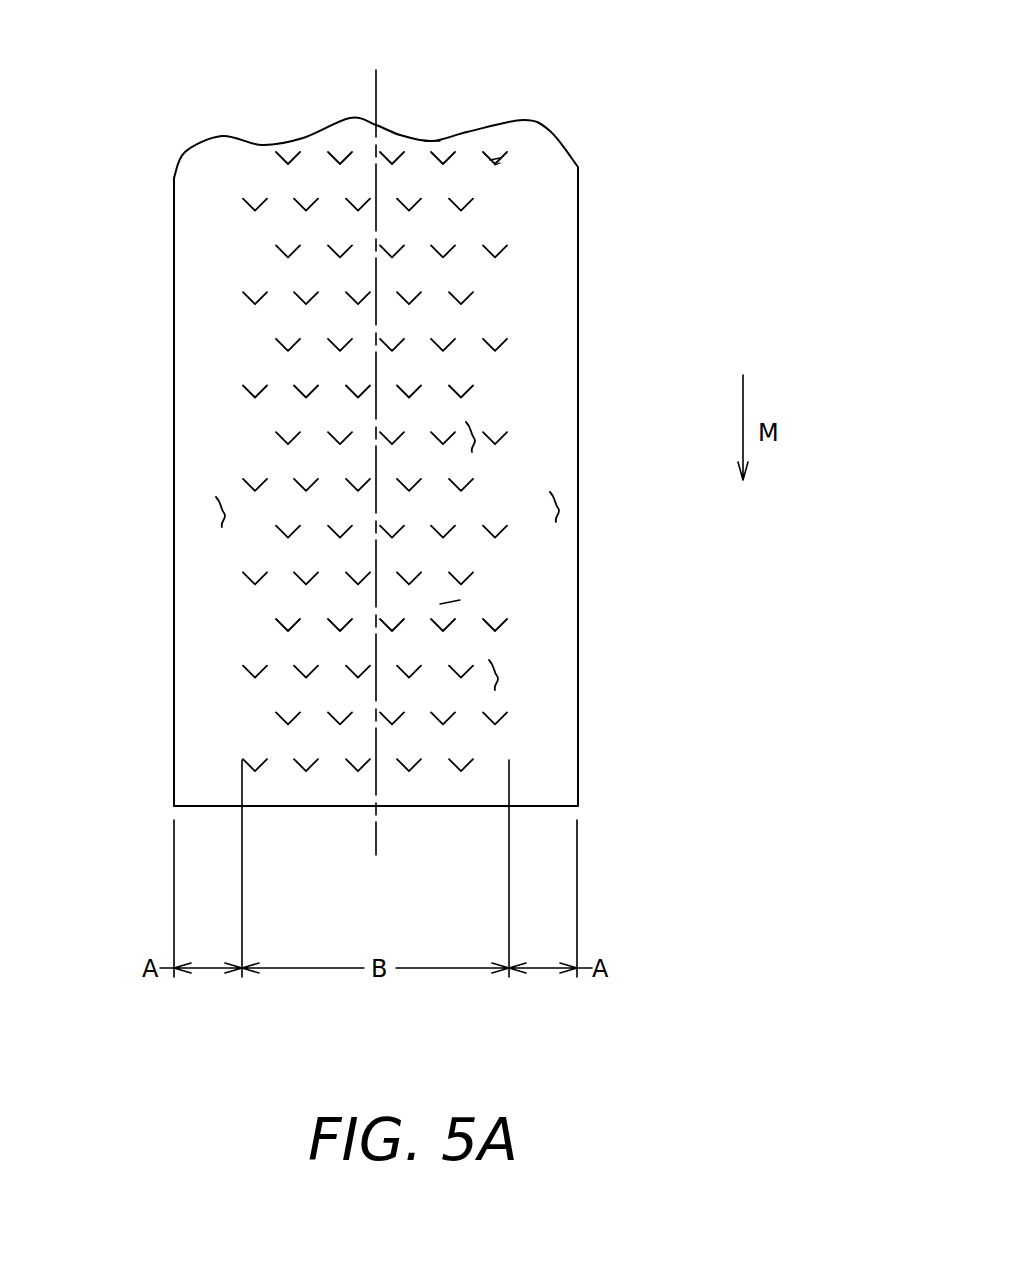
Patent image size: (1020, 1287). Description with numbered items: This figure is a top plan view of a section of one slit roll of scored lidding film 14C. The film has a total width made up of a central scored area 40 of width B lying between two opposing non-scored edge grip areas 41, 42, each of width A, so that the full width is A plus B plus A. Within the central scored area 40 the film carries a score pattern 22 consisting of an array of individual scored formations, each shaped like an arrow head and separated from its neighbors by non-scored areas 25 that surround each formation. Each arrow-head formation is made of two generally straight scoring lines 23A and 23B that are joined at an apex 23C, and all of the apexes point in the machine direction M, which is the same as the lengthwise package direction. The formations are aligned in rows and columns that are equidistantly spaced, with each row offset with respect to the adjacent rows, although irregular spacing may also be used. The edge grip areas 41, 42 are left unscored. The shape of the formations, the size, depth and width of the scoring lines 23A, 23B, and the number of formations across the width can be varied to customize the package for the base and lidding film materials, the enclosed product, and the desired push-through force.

The slit roll of lidding film 14C is at (588, 86).
The score pattern 22 is at (275, 177).
The first straight line 23A is at (497, 160).
The second straight line 23B is at (485, 152).
The apex 23C is at (497, 163).
The non-scored area 25 is at (473, 428).
The central scored area 40 is at (443, 605).
The first edge grip area 41 is at (218, 512).
The second edge grip area 42 is at (555, 505).